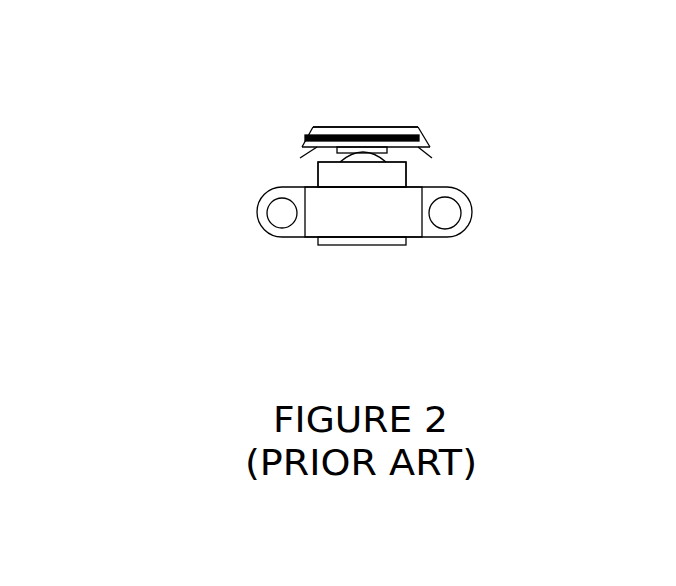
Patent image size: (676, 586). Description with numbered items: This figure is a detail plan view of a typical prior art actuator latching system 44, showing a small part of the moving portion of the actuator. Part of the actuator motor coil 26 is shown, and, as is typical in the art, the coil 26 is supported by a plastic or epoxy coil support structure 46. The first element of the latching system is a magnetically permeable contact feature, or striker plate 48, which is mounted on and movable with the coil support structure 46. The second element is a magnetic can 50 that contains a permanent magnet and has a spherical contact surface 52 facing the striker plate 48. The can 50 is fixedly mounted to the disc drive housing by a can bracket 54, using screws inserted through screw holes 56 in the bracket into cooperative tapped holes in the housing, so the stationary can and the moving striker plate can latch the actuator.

The actuator latching system 44 is at (196, 145).
The coil support structure 46 is at (330, 127).
The striker plate 48 is at (362, 133).
The actuator motor coil 26 is at (390, 128).
The spherical contact surface 52 is at (366, 158).
The magnetic can 50 is at (370, 172).
The can bracket 54 is at (257, 208).
The screw holes 56 is at (280, 212).